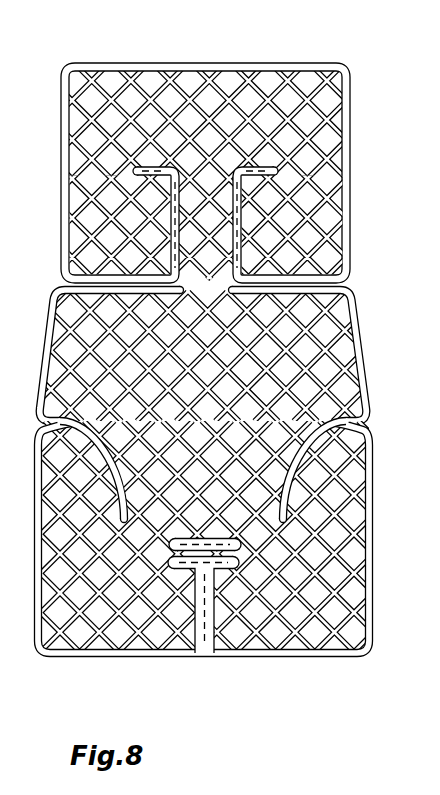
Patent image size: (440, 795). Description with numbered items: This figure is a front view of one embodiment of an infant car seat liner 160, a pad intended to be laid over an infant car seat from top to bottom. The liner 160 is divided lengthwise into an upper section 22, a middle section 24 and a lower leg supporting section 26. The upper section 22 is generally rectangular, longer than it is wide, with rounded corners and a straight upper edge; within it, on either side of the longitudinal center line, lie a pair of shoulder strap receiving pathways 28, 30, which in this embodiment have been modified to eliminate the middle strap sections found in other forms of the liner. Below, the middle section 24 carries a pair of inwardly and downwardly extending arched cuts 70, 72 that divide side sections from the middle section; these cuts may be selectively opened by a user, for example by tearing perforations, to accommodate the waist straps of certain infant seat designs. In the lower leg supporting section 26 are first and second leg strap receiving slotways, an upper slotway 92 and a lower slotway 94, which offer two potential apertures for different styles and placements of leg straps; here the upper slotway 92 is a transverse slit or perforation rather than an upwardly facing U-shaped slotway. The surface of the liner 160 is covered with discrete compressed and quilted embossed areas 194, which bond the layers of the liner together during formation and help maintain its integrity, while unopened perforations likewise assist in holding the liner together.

The liner 160 is at (220, 360).
The upper section 22 is at (220, 145).
The middle section 24 is at (205, 369).
The lower leg supporting section 26 is at (274, 597).
The shoulder strap receiving pathway 28 is at (110, 237).
The shoulder strap receiving pathway 30 is at (287, 218).
The arched cut 70 is at (100, 422).
The arched cut 72 is at (318, 430).
The upper slotway 92 is at (150, 568).
The lower slotway 94 is at (175, 593).
The compressed and quilted embossed areas 194 is at (298, 87).